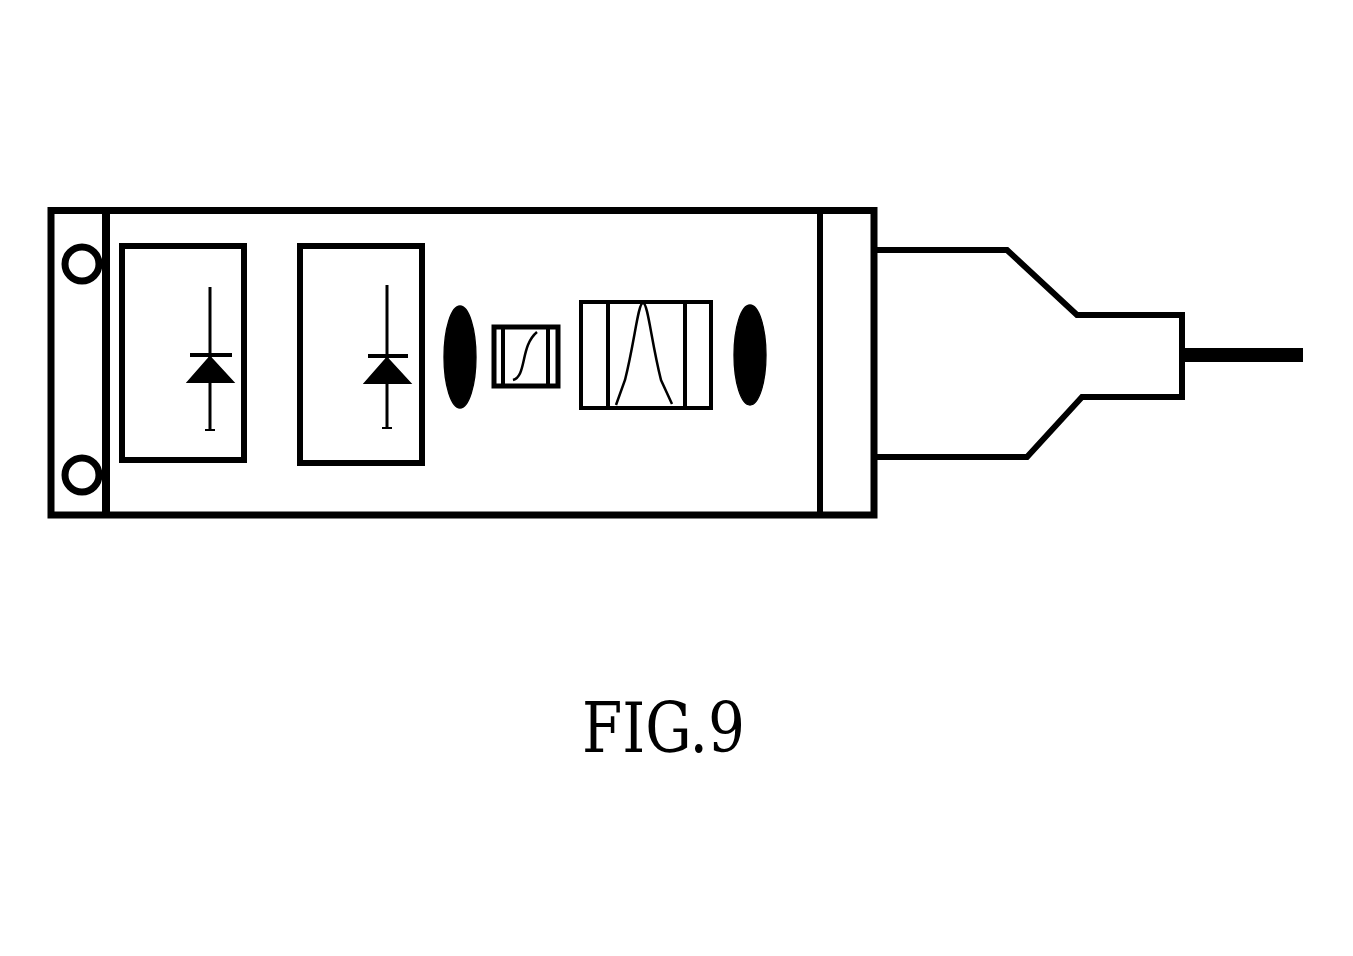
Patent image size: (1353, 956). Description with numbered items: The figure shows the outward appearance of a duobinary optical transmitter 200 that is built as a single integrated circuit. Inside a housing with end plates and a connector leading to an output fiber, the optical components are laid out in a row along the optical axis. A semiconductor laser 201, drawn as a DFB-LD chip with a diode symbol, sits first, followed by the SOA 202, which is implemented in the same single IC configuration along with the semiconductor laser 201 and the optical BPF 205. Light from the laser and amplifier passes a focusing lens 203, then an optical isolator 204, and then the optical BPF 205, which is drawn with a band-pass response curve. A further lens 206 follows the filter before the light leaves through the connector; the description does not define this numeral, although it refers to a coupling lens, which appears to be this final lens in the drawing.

The duobinary optical transmitter 200 is at (965, 62).
The semiconductor laser 201 is at (175, 243).
The SOA 202 is at (355, 243).
The focusing lens 203 is at (460, 305).
The optical isolator 204 is at (527, 325).
The optical BPF 205 is at (643, 300).
The lens 206 is at (748, 305).